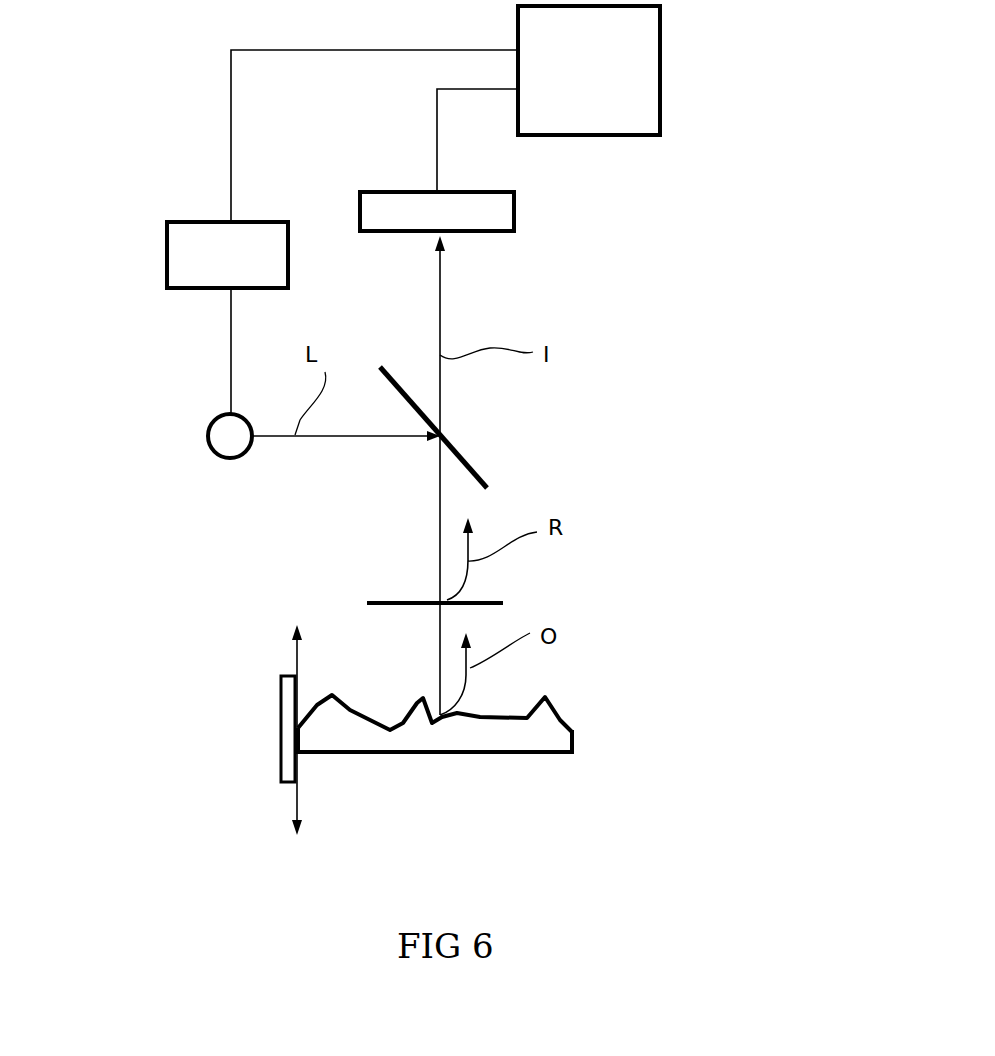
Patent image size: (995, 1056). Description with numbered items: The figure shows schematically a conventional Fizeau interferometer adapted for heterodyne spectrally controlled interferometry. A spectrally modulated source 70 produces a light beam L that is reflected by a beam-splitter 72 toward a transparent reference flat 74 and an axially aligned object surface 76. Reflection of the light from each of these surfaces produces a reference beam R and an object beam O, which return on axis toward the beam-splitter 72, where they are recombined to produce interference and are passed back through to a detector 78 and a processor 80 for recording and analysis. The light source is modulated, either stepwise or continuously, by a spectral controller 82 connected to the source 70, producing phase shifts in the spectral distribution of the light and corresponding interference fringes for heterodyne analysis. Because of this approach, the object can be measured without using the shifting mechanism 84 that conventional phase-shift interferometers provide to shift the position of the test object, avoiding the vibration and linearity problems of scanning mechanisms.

The spectrally modulated source 70 is at (208, 456).
The beam-splitter 72 is at (478, 470).
The transparent reference flat 74 is at (370, 602).
The object surface 76 is at (572, 723).
The detector 78 is at (516, 233).
The processor 80 is at (610, 137).
The spectral controller 82 is at (165, 228).
The shifting mechanism 84 is at (280, 722).